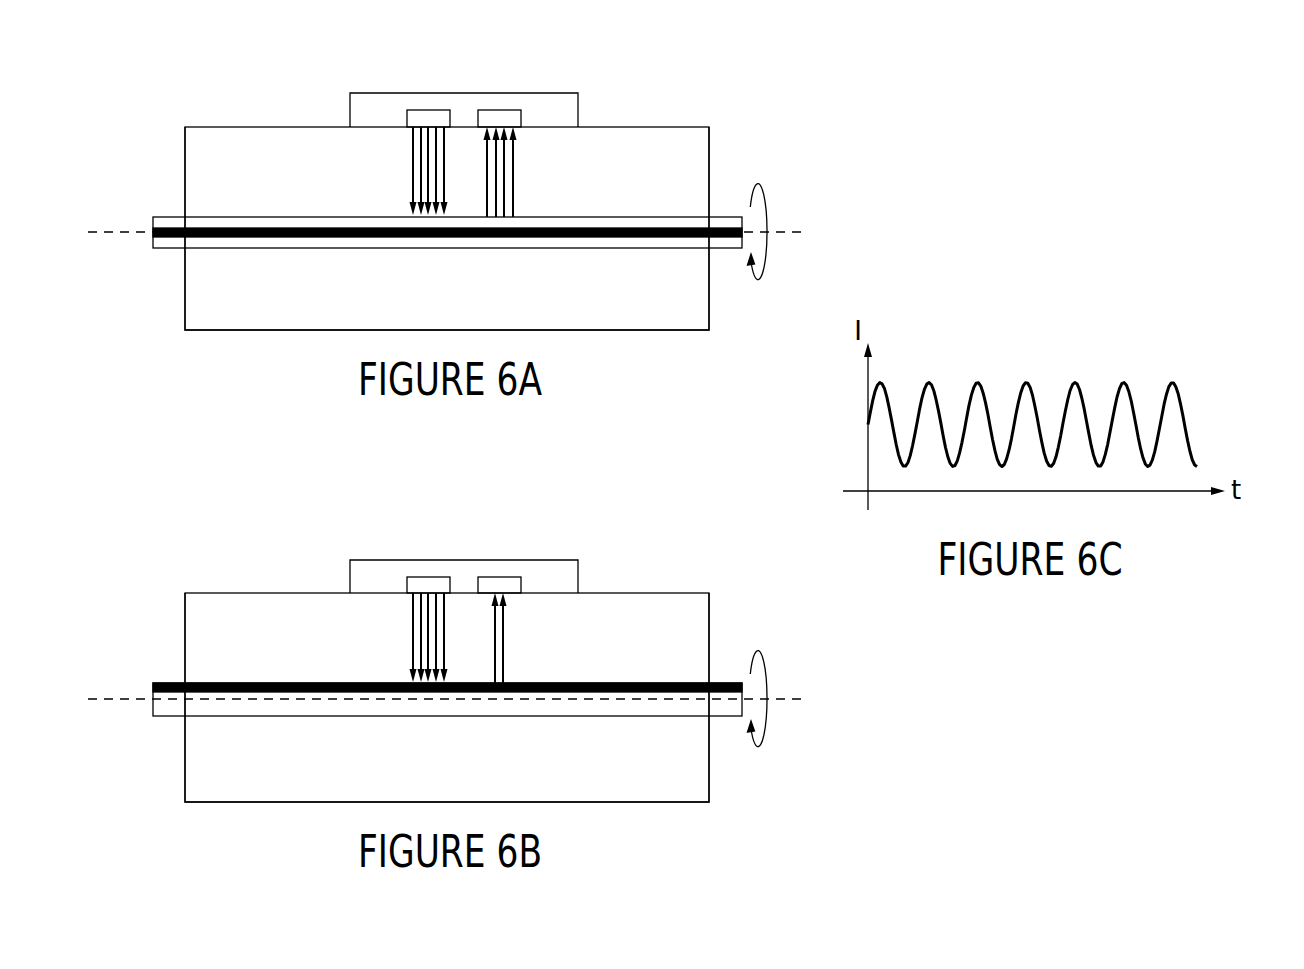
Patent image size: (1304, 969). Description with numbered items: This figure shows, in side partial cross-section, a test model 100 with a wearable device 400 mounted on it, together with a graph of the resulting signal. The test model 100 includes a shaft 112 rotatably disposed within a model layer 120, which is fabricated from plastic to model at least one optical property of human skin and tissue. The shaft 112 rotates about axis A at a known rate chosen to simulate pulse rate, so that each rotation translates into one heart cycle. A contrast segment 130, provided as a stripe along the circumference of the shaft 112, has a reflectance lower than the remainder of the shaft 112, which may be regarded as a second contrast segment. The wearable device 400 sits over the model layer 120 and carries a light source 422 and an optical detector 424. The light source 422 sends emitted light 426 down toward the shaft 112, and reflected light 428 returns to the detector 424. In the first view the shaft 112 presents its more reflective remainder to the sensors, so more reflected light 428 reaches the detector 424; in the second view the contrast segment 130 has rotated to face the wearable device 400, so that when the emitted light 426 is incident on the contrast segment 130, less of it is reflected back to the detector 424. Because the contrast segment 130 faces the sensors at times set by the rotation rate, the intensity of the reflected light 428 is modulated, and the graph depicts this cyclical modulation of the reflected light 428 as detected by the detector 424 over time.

In FIG. 6A, the test model 100 is at (648, 106).
In FIG. 6B, the test model 100 is at (648, 573).
In FIG. 6A, the shaft 112 is at (162, 215).
In FIG. 6B, the shaft 112 is at (162, 717).
In FIG. 6A, the model layer 120 is at (216, 142).
In FIG. 6B, the model layer 120 is at (216, 608).
In FIG. 6A, the contrast segment 130 is at (162, 238).
In FIG. 6B, the contrast segment 130 is at (162, 682).
In FIG. 6A, the wearable device 400 is at (370, 92).
In FIG. 6B, the wearable device 400 is at (370, 559).
In FIG. 6A, the light source 422 is at (437, 108).
In FIG. 6B, the light source 422 is at (437, 575).
In FIG. 6A, the optical detector 424 is at (499, 108).
In FIG. 6B, the optical detector 424 is at (499, 575).
In FIG. 6A, the emitted light 426 is at (410, 183).
In FIG. 6B, the emitted light 426 is at (410, 649).
In FIG. 6A, the reflected light 428 is at (514, 182).
In FIG. 6B, the reflected light 428 is at (505, 648).
In FIG. 6C, the reflected light 428 is at (1181, 392).